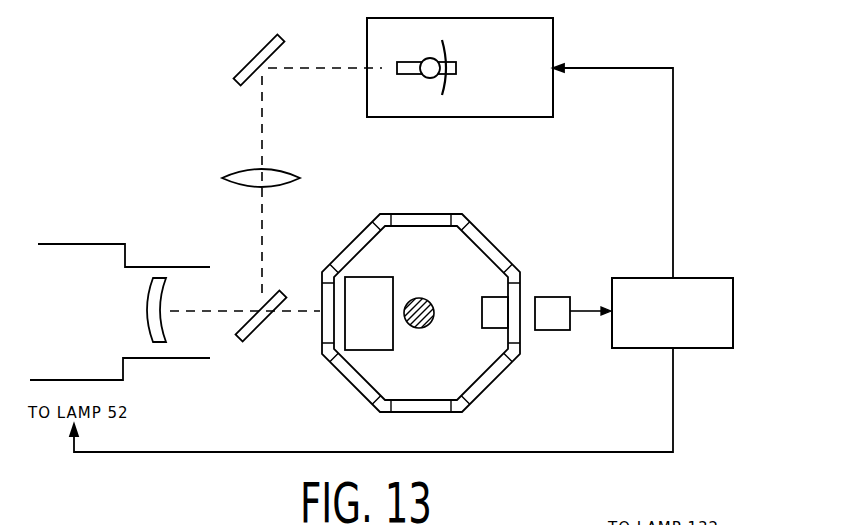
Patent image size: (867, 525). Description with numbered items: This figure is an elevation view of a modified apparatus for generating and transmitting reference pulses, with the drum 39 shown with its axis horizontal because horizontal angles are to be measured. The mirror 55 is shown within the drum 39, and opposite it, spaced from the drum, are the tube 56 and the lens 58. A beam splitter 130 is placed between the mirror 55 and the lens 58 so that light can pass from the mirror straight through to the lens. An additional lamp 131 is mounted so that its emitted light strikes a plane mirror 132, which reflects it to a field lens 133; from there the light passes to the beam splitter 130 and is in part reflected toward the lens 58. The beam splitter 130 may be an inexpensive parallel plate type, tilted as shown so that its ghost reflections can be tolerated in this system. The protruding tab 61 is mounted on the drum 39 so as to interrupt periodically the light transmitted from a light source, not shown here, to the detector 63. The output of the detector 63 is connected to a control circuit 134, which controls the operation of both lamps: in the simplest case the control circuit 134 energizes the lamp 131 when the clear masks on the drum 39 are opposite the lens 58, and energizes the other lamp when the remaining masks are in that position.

The drum 39 is at (483, 229).
The mirror 55 is at (383, 277).
The tube 56 is at (95, 243).
The lens 58 is at (146, 311).
The protruding tab 61 is at (490, 331).
The detector 63 is at (543, 330).
The beam splitter 130 is at (253, 343).
The lamp 131 is at (530, 6).
The plane mirror 132 is at (266, 44).
The field lens 133 is at (289, 166).
The control circuit 134 is at (716, 276).